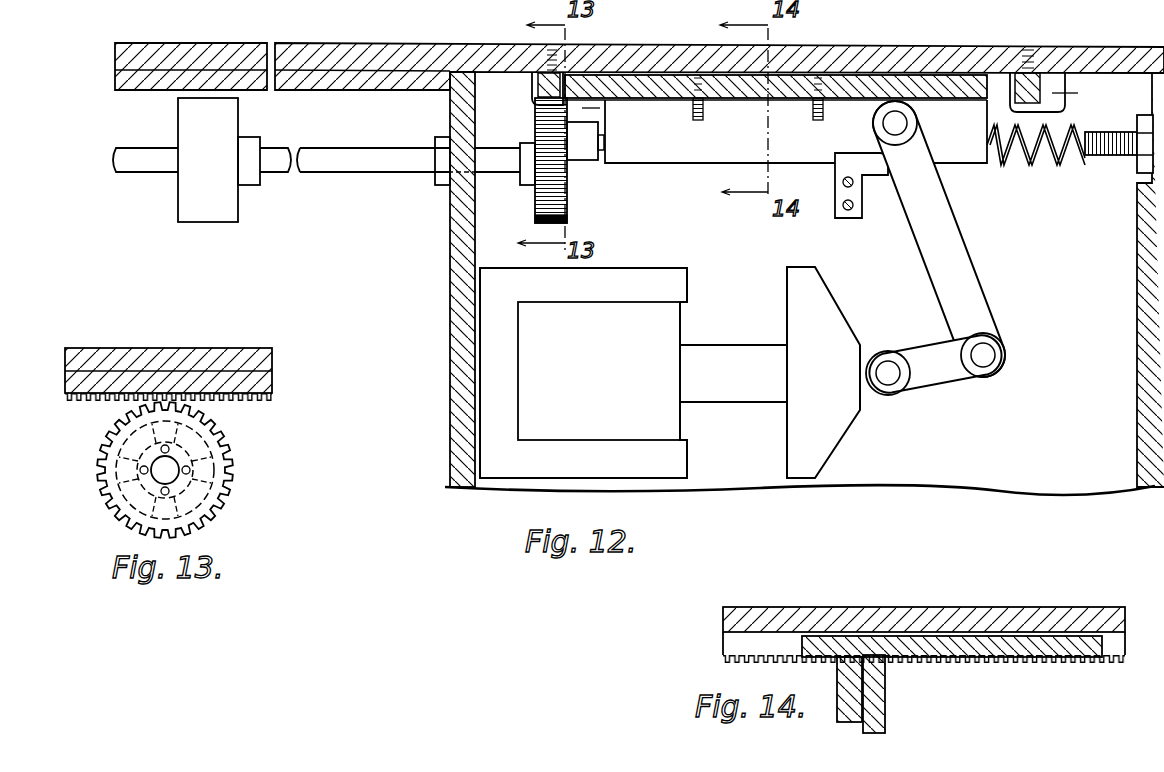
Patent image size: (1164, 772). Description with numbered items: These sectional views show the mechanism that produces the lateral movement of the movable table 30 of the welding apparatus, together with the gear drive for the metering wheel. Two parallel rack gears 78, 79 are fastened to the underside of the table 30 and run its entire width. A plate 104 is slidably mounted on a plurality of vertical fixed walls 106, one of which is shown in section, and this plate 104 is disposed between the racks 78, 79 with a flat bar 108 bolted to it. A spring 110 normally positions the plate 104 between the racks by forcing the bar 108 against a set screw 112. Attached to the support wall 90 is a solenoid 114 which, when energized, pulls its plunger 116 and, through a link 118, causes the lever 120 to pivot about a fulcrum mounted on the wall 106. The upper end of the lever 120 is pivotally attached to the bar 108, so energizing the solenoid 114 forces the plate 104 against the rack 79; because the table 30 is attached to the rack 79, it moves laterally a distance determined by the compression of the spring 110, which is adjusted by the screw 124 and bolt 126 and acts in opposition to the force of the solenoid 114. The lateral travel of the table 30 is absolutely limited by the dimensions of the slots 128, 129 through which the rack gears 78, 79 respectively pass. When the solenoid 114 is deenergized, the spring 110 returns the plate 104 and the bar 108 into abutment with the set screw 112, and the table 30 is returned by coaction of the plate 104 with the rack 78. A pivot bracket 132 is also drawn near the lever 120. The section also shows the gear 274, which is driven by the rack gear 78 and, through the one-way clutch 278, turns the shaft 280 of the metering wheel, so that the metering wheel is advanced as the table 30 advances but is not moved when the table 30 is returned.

In FIG. 12, the movable table 30 is at (864, 48).
In FIG. 13, the movable table 30 is at (208, 348).
In FIG. 14, the movable table 30 is at (908, 607).
In FIG. 12, the rack gear 78 is at (532, 88).
In FIG. 13, the rack gear 78 is at (265, 391).
In FIG. 14, the rack gear 78 is at (723, 650).
In FIG. 12, the rack gear 79 is at (1033, 75).
In FIG. 12, the support member 90 is at (448, 326).
In FIG. 12, the plate 104 is at (945, 88).
In FIG. 14, the plate 104 is at (992, 650).
In FIG. 14, the vertical fixed wall 106 is at (885, 713).
In FIG. 12, the flat bar 108 is at (696, 165).
In FIG. 14, the flat bar 108 is at (837, 705).
In FIG. 12, the spring 110 is at (1053, 163).
In FIG. 12, the set screw 112 is at (597, 150).
In FIG. 12, the solenoid 114 is at (649, 273).
In FIG. 12, the plunger 116 is at (750, 350).
In FIG. 12, the link 118 is at (930, 353).
In FIG. 12, the lever 120 is at (963, 255).
In FIG. 12, the screw 124 is at (1123, 128).
In FIG. 12, the bolt 126 is at (1137, 167).
In FIG. 12, the slot 128 is at (600, 108).
In FIG. 12, the slot 129 is at (1085, 93).
In FIG. 12, the pivot bracket 132 is at (879, 188).
In FIG. 12, the gear 274 is at (537, 206).
In FIG. 13, the gear 274 is at (228, 442).
In FIG. 12, the clutch 278 is at (186, 221).
In FIG. 12, the shaft 280 is at (148, 135).